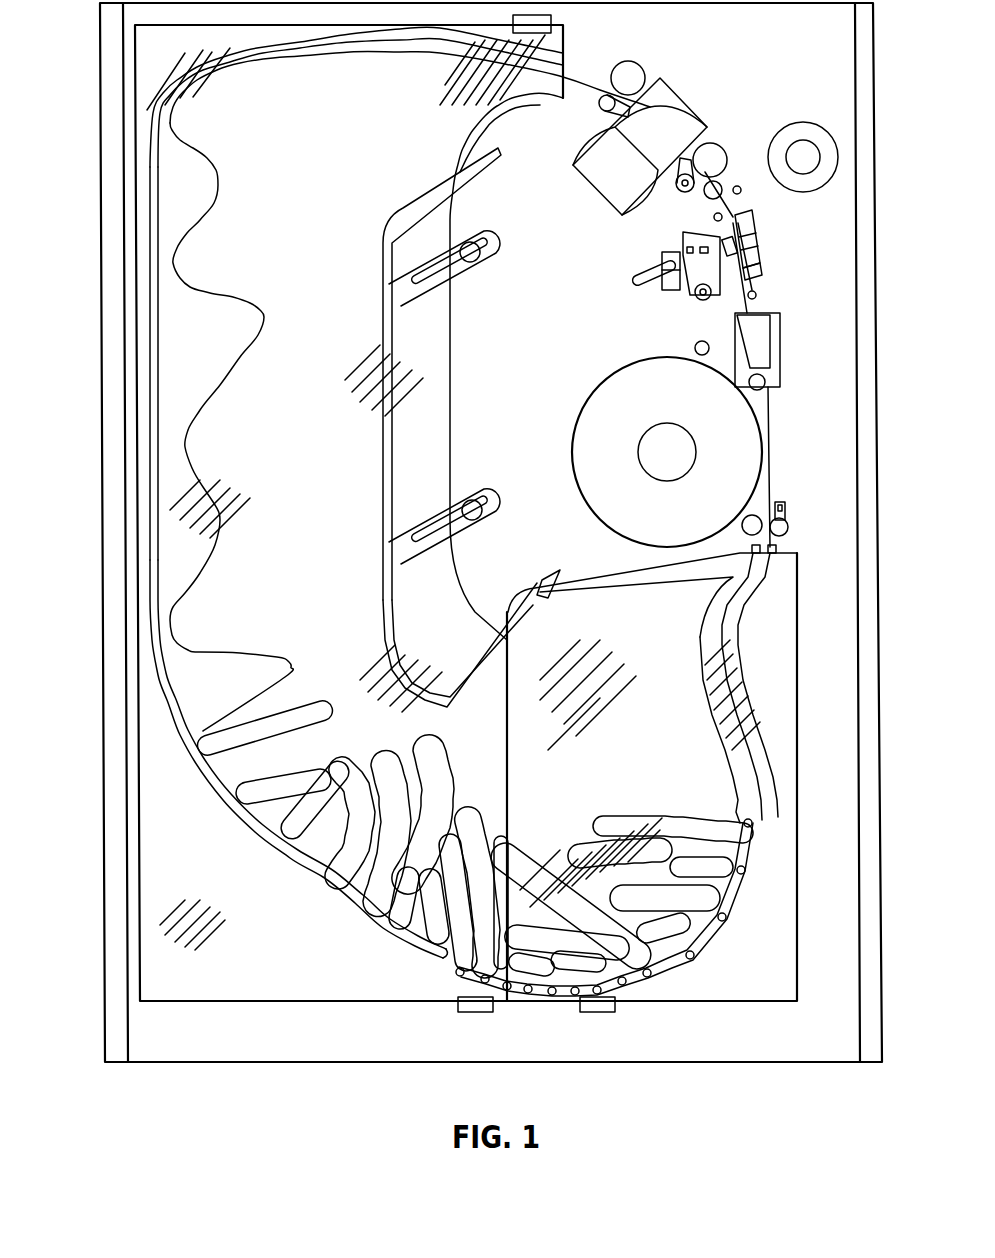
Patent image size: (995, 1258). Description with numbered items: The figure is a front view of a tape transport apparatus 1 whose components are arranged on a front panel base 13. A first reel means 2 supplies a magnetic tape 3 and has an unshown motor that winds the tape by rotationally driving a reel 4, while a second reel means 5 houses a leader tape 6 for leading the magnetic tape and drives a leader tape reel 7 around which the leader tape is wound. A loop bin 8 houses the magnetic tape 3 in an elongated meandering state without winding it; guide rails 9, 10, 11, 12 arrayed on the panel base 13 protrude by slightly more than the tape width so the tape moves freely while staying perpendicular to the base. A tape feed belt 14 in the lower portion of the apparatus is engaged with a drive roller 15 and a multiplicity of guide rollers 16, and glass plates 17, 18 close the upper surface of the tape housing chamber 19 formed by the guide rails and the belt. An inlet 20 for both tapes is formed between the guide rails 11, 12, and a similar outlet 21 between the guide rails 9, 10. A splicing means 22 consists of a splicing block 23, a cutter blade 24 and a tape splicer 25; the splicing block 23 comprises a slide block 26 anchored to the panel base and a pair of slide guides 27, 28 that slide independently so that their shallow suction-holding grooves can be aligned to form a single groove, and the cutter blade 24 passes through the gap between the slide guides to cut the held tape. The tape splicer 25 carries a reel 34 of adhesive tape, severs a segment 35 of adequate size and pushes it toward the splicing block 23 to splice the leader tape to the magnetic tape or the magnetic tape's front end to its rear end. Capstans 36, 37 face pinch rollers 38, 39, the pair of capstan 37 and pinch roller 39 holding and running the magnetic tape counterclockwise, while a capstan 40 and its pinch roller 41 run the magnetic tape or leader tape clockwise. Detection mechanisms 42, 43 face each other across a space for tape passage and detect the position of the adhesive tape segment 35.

The tape transport apparatus 1 is at (832, 470).
The first reel means 2 is at (647, 447).
The magnetic tape 3 is at (238, 358).
The reel 4 is at (598, 392).
The second reel means 5 is at (798, 147).
The leader tape 6 is at (733, 217).
The leader tape reel 7 is at (812, 130).
The loop bin 8 is at (572, 806).
The guide rail 9 is at (778, 797).
The guide rail 10 is at (610, 603).
The guide rail 11 is at (385, 475).
The guide rail 12 is at (158, 425).
The front panel base 13 is at (848, 912).
The tape feed belt 14 is at (672, 966).
The drive roller 15 is at (553, 994).
The guide rollers 16 is at (485, 983).
The glass plate 17 is at (240, 993).
The glass plate 18 is at (745, 995).
The tape housing chamber 19 is at (708, 737).
The inlet 20 is at (563, 73).
The outlet 21 is at (763, 537).
The splicing means 22 is at (765, 276).
The splicing block 23 is at (753, 243).
The cutter blade 24 is at (733, 298).
The tape splicer 25 is at (693, 273).
The slide block 26 is at (753, 235).
The slide guide 27 is at (757, 257).
The slide guide 28 is at (736, 217).
The reel 34 is at (697, 290).
The adhesive tape segment 35 is at (737, 236).
The capstan 36 is at (632, 62).
The capstan 37 is at (713, 147).
The pinch roller 38 is at (600, 110).
The pinch roller 39 is at (683, 190).
The capstan 40 is at (758, 517).
The pinch roller 41 is at (788, 525).
The detection mechanism 42 is at (713, 217).
The detection mechanism 43 is at (737, 185).